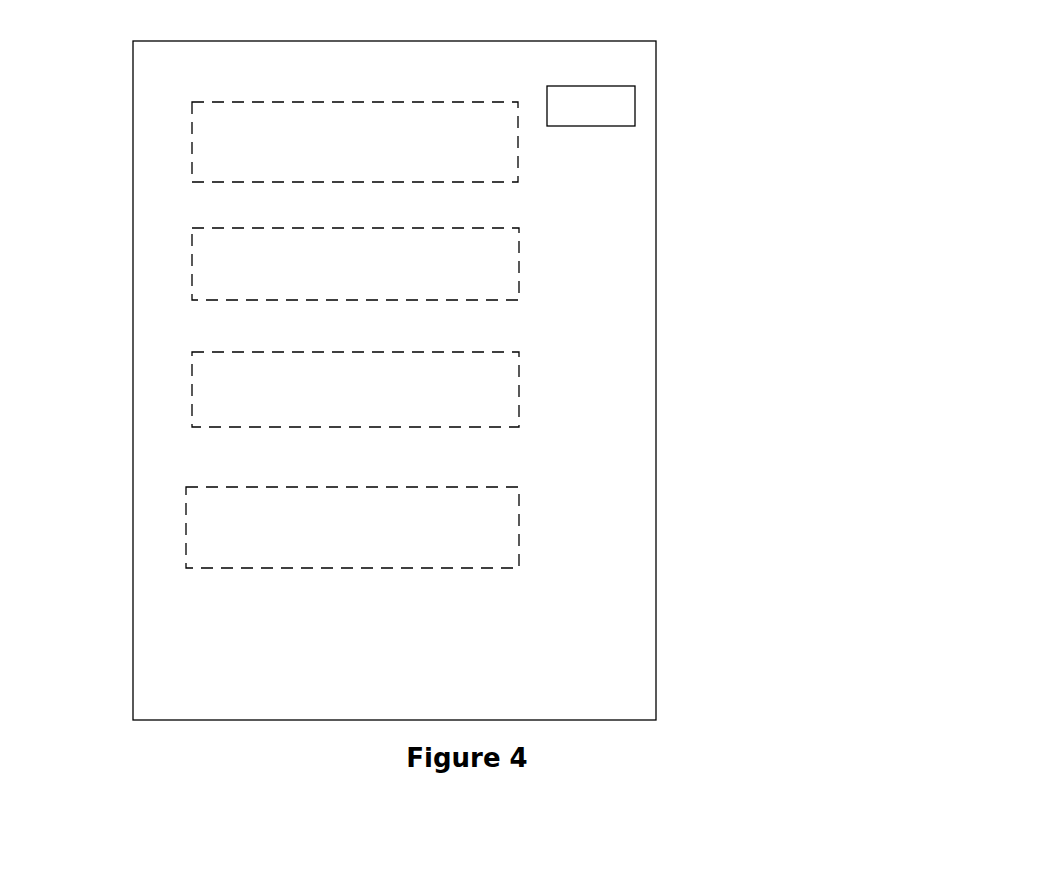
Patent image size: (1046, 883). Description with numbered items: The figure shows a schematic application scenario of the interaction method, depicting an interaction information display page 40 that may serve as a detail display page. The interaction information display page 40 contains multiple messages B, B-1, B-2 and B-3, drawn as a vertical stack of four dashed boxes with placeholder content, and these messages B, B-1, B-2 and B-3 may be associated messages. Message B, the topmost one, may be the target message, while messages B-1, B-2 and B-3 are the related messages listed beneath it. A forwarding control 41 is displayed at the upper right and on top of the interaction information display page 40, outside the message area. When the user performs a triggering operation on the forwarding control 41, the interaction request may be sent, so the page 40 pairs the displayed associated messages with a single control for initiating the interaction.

The interaction information display page 40 is at (650, 48).
The forwarding control 41 is at (635, 106).
The message B is at (192, 142).
The message B-1 is at (197, 262).
The message B-2 is at (192, 388).
The message B-3 is at (190, 527).